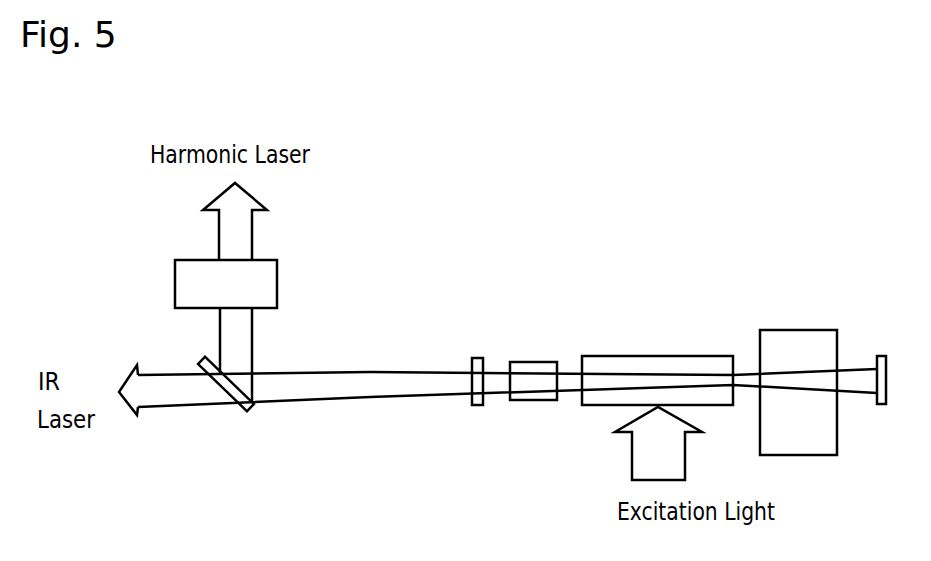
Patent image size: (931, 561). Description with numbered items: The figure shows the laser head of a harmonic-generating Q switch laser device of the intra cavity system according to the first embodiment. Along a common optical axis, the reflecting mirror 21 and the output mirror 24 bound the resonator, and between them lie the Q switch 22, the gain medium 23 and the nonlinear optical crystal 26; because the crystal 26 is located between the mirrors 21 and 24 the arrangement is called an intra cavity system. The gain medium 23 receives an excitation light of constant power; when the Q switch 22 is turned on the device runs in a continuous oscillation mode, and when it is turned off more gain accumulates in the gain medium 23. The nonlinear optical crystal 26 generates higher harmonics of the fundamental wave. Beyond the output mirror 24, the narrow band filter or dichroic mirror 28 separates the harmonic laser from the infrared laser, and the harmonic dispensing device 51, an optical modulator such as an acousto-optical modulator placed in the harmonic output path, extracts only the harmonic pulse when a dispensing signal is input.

The harmonic dispensing device 51 is at (277, 268).
The narrow band filter or dichroic mirror 28 is at (245, 410).
The output mirror 24 is at (473, 407).
The nonlinear optical crystal 26 is at (525, 360).
The gain medium 23 is at (652, 352).
The Q switch 22 is at (795, 328).
The reflecting mirror 21 is at (882, 405).